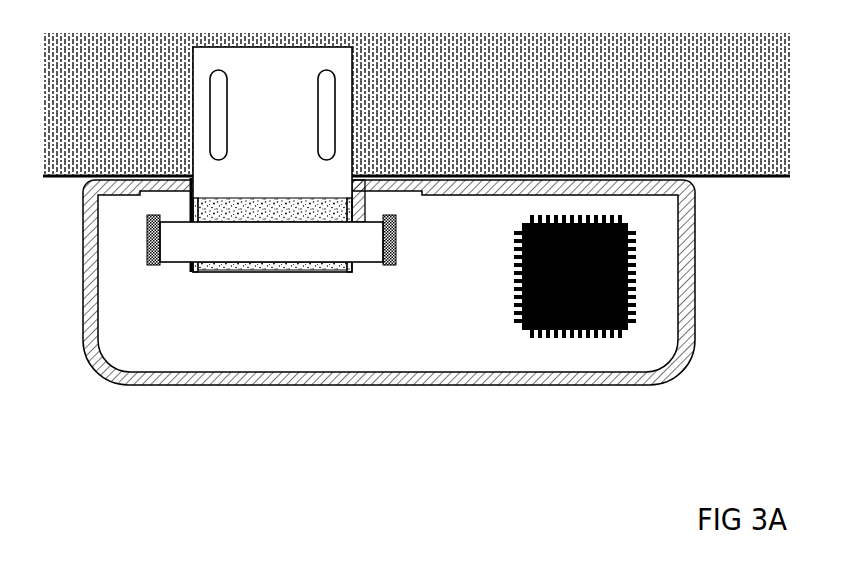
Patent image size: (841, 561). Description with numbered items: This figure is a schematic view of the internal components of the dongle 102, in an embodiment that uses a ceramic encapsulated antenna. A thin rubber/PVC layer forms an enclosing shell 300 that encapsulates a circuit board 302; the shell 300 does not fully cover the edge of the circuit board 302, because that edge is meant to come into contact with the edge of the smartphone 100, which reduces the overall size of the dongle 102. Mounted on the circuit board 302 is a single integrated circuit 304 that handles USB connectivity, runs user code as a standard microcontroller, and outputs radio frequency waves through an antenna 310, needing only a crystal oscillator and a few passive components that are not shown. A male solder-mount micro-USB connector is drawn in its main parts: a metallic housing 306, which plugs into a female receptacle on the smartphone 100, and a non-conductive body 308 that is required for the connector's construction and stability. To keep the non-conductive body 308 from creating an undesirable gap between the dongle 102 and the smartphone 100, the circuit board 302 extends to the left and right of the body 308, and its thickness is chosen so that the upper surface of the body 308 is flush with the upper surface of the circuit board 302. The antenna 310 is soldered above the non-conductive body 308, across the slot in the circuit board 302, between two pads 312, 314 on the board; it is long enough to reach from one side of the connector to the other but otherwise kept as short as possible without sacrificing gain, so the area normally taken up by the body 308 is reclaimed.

The smartphone 100 is at (112, 158).
The dongle 102 is at (155, 410).
The enclosing shell 300 is at (678, 380).
The circuit board 302 is at (483, 231).
The integrated circuit 304 is at (597, 291).
The metallic housing 306 is at (293, 130).
The non-conductive body 308 is at (267, 197).
The antenna 310 is at (293, 253).
The pad 312 is at (157, 267).
The pad 314 is at (383, 262).